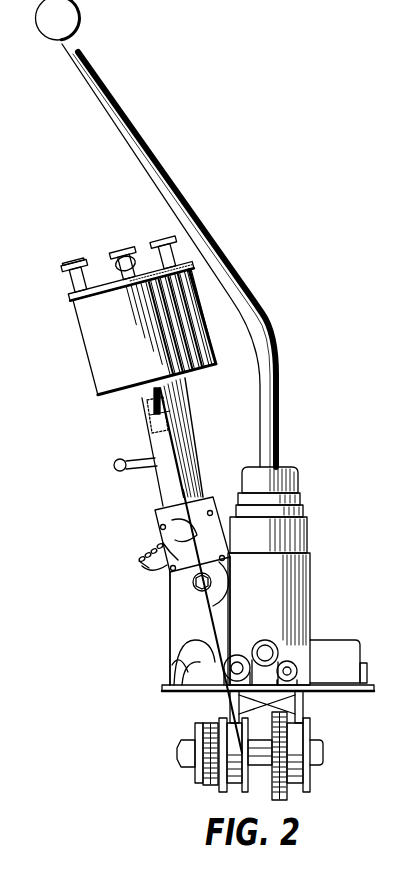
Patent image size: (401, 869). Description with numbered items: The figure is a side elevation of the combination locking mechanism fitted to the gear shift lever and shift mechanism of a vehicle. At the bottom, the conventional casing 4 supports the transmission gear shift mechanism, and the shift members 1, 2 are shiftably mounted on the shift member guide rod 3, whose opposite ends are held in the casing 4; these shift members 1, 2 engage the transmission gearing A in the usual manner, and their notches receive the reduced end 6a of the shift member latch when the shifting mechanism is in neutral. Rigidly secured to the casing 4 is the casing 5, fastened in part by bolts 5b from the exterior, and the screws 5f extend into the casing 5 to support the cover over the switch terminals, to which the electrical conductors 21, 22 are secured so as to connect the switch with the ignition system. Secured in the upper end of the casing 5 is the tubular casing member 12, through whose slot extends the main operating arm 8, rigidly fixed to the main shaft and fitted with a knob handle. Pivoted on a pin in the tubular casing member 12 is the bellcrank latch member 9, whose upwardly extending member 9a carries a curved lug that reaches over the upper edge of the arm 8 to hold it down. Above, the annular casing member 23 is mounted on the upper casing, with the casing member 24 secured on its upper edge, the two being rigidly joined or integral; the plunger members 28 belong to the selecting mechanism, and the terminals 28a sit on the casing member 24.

The vehicle transmission shift member 1 is at (241, 700).
The vehicle transmission shift member 2 is at (304, 697).
The shift member guide rod 3 is at (136, 398).
The casing 4 is at (309, 580).
The casing 5 is at (154, 514).
The bolt 5b is at (196, 592).
The screw 5f is at (216, 497).
The reduced end of latch 6a is at (170, 567).
The main operating arm 8 is at (166, 416).
The latch member 9 is at (140, 470).
The member of latch 9a is at (114, 466).
The tubular casing member 12 is at (195, 462).
The electrical conductor 21 is at (149, 567).
The electrical conductor 22 is at (138, 560).
The annular casing member 23 is at (95, 340).
The casing member 24 is at (72, 303).
The plunger member 28 is at (76, 290).
The terminal 28a is at (80, 272).
The transmission gearing A is at (205, 760).